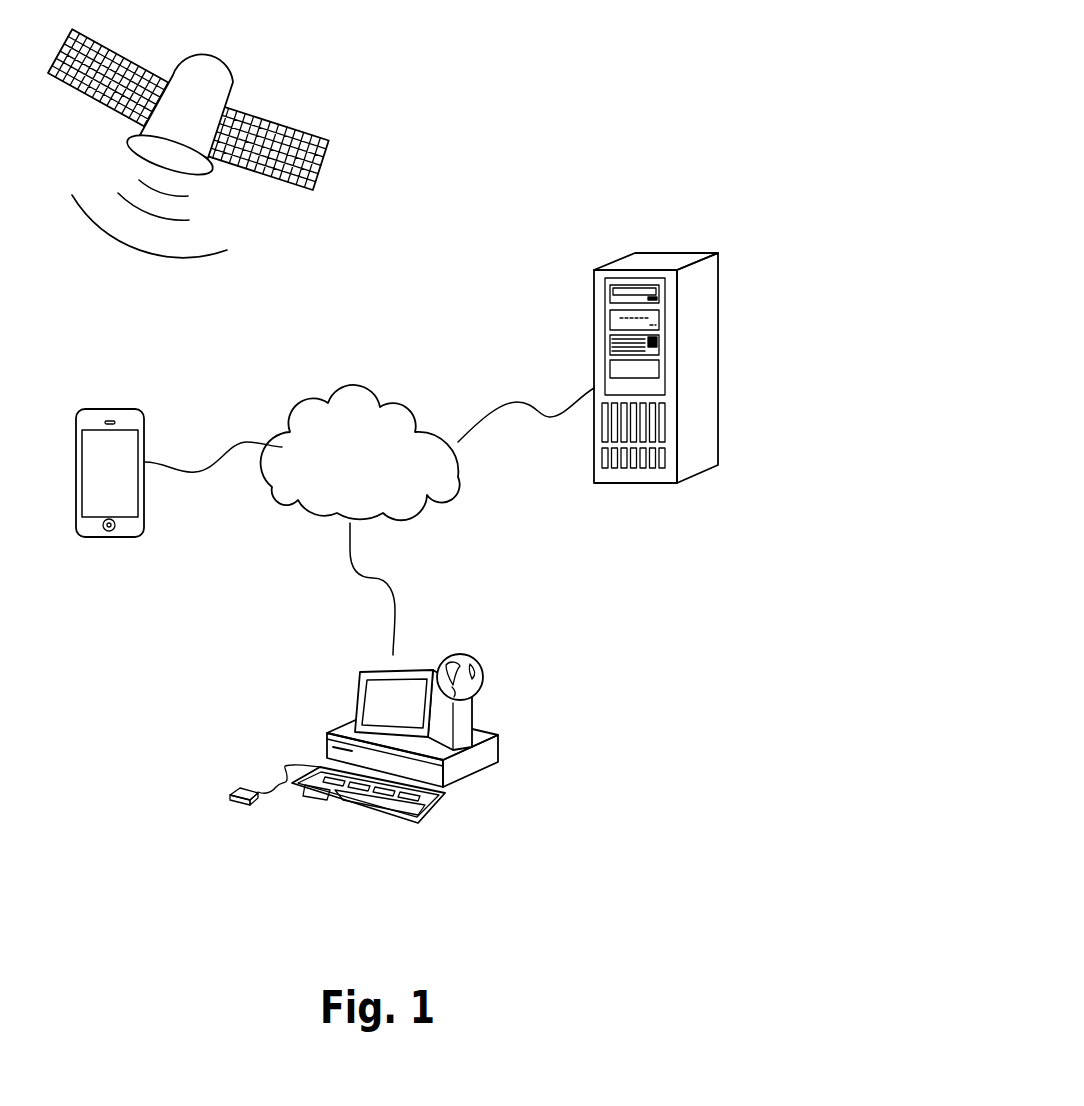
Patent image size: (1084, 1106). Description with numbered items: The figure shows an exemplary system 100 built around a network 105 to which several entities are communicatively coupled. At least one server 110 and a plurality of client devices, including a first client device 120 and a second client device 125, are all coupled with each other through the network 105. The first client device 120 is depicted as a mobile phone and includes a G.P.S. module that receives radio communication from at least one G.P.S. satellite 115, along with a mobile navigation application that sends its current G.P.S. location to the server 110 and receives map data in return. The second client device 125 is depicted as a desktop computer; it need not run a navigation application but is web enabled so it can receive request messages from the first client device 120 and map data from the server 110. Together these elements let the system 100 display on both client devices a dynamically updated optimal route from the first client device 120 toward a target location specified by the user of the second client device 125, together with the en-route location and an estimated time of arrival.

The system 100 is at (683, 20).
The network 105 is at (375, 495).
The server 110 is at (645, 483).
The G.P.S. satellite 115 is at (298, 198).
The first client device 120 is at (127, 483).
The second client device 125 is at (498, 757).